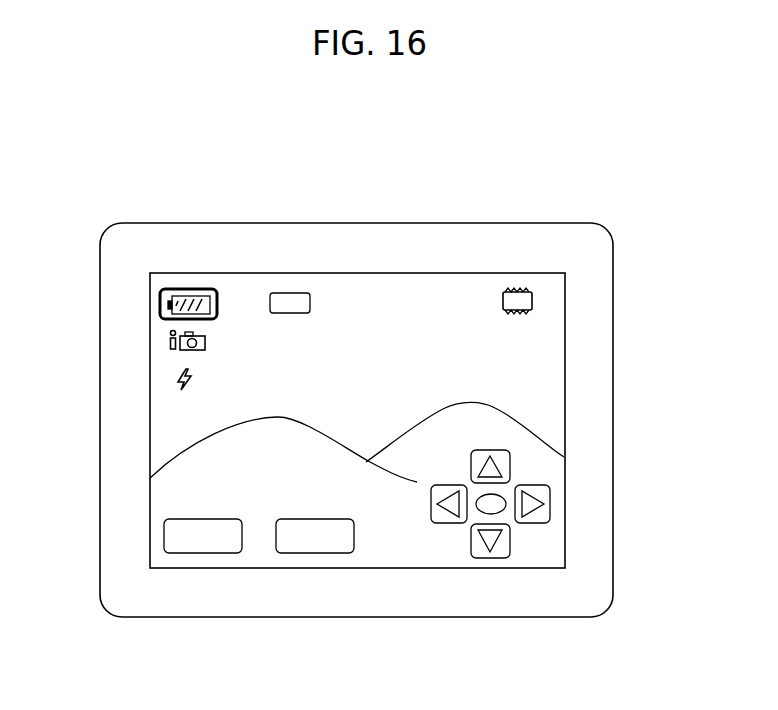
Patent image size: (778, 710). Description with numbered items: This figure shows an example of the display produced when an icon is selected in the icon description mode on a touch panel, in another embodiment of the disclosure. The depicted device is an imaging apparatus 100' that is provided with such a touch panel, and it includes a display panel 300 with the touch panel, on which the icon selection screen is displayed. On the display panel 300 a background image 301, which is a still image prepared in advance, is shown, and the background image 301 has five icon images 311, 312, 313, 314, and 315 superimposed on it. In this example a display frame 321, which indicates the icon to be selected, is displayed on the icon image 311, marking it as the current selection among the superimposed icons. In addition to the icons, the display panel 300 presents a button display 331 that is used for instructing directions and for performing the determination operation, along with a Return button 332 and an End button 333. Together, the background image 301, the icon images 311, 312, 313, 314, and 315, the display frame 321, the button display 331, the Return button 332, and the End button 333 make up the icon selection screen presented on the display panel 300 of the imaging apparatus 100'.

The imaging apparatus 100' is at (613, 144).
The display panel 300 is at (565, 420).
The background image 301 is at (540, 390).
The icon image 311 is at (183, 288).
The icon image 312 is at (310, 287).
The icon image 313 is at (517, 288).
The icon image 314 is at (162, 343).
The icon image 315 is at (172, 380).
The display frame 321 is at (158, 308).
The button display 331 is at (513, 533).
The Return button 332 is at (203, 553).
The End button 333 is at (312, 553).